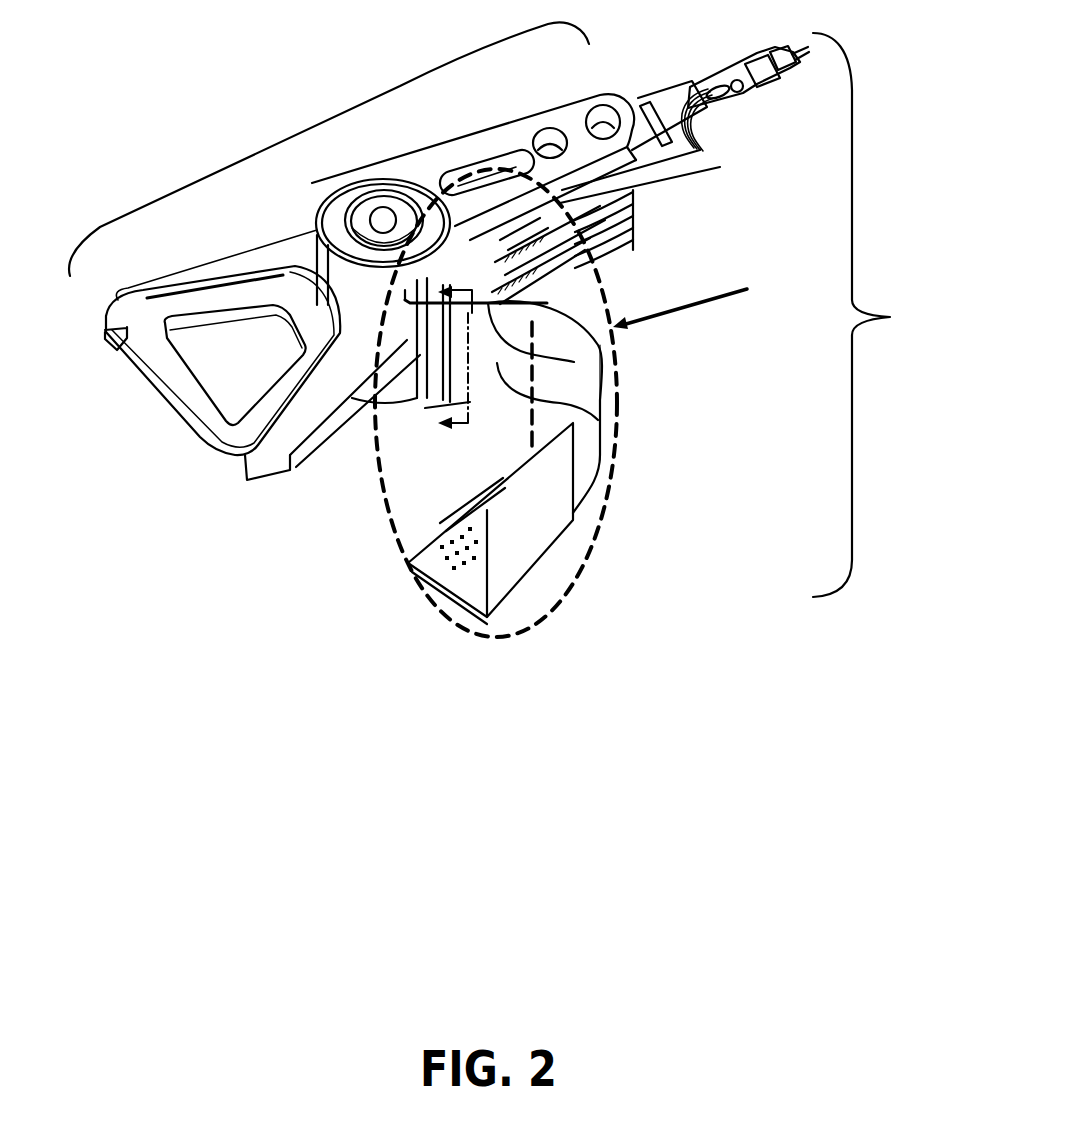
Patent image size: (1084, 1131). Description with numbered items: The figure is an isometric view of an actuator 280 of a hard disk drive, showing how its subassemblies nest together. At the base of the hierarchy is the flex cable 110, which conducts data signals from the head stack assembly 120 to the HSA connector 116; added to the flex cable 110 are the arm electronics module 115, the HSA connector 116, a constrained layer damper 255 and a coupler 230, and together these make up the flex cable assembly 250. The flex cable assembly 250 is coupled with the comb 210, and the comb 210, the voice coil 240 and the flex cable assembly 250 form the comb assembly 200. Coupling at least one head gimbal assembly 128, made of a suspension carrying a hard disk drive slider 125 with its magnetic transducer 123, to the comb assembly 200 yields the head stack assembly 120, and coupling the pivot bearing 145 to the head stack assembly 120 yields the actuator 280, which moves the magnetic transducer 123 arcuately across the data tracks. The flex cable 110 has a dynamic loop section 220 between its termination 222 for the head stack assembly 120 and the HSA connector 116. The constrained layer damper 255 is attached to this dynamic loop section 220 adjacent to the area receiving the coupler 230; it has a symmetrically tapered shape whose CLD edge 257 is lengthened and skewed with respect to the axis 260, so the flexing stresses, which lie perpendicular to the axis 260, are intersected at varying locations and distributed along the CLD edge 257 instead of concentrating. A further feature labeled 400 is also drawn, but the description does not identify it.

The flex cable 110 is at (557, 443).
The arm electronics (A/E) module 115 is at (480, 292).
The HSA connector 116 is at (527, 548).
The head stack assembly (HSA) 120 is at (879, 315).
The magnetic transducer 123 is at (780, 72).
The hard disk drive slider 125 is at (776, 72).
The head gimbal assembly (HGA) 128 is at (686, 164).
The pivot bearing 145 is at (358, 213).
The comb assembly 200 is at (318, 130).
The comb 210 is at (509, 140).
The dynamic loop section 220 is at (600, 343).
The termination 222 is at (582, 262).
The coupler 230 is at (393, 410).
The voice coil 240 is at (235, 430).
The flex cable assembly 250 is at (703, 300).
The constrained layer damper (CLD) 255 is at (497, 363).
The CLD edge 257 is at (519, 363).
The axis 260 is at (533, 343).
The actuator 280 is at (660, 403).
The gap 400 is at (432, 364).